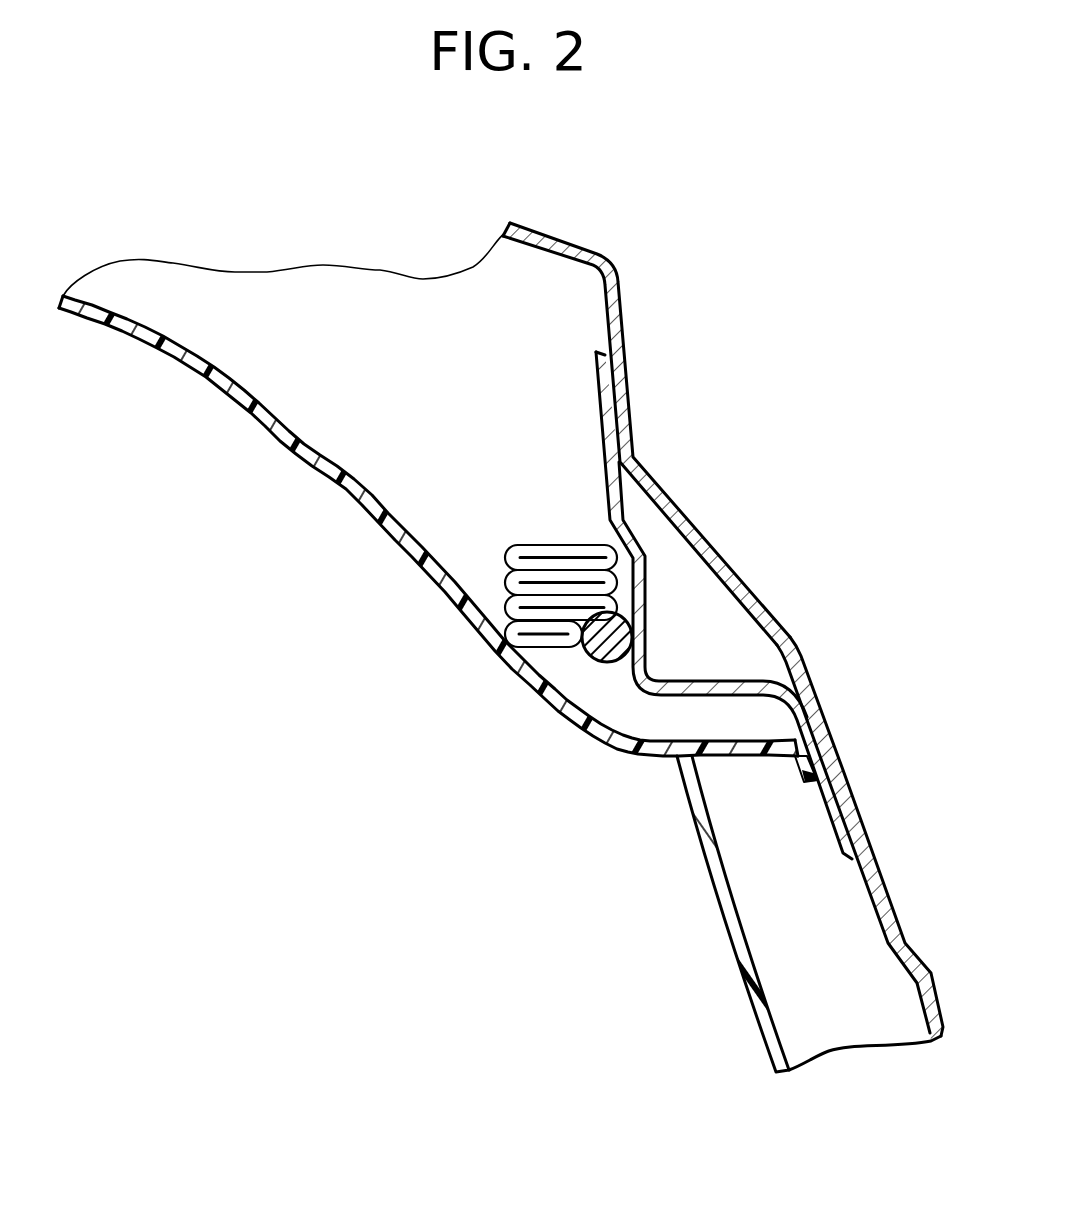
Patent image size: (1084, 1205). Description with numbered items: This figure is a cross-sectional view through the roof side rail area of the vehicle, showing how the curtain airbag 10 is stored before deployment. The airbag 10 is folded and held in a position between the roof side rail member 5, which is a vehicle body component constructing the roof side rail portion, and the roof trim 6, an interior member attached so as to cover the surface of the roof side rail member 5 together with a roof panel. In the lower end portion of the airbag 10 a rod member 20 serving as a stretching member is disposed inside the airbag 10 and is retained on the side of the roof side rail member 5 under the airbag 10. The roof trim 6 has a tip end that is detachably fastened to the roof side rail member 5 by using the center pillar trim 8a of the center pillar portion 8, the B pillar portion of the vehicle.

The roof side rail member 5 is at (617, 362).
The roof trim 6 is at (380, 525).
The center pillar portion 8 is at (892, 890).
The center pillar trim 8a is at (722, 908).
The curtain airbag 10 is at (543, 542).
The rod member 20 is at (594, 657).